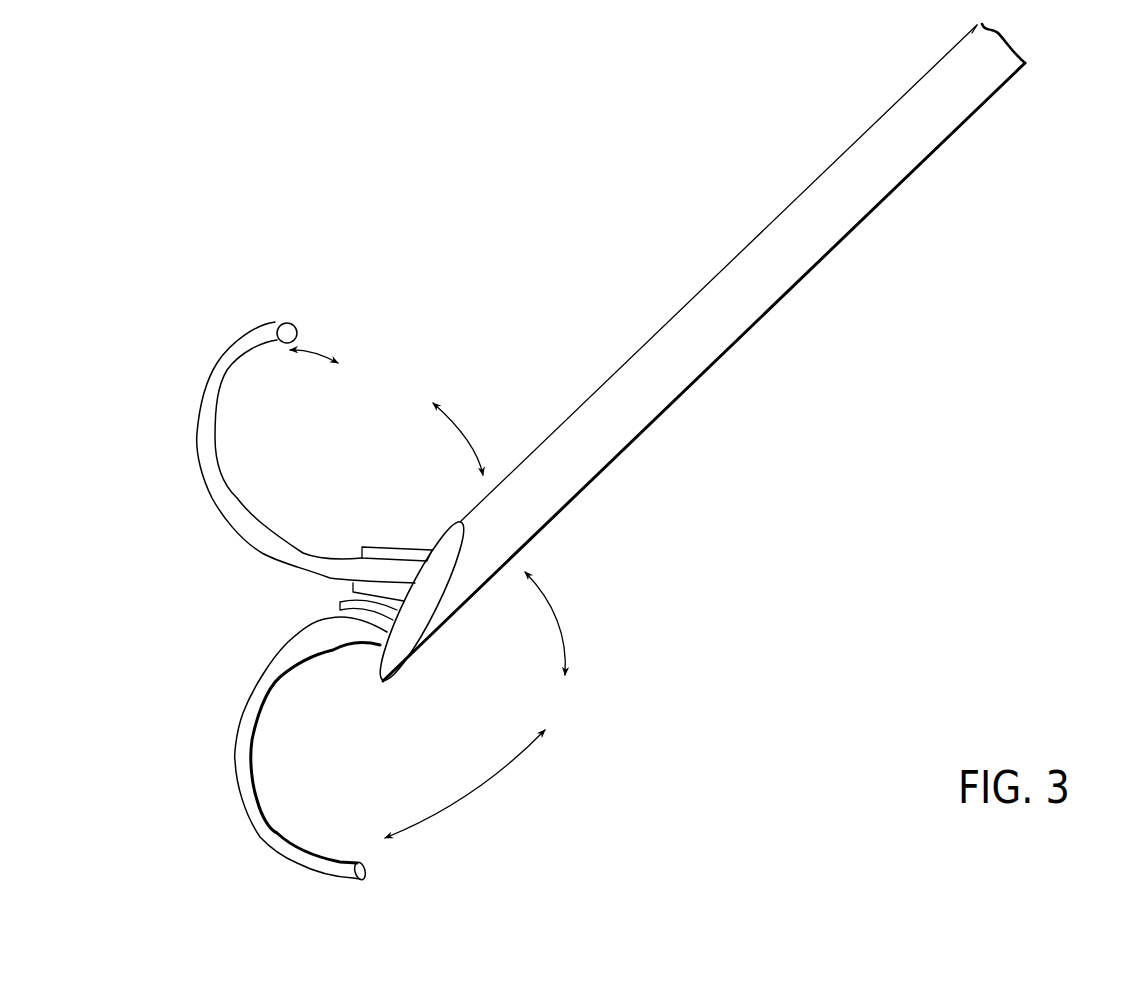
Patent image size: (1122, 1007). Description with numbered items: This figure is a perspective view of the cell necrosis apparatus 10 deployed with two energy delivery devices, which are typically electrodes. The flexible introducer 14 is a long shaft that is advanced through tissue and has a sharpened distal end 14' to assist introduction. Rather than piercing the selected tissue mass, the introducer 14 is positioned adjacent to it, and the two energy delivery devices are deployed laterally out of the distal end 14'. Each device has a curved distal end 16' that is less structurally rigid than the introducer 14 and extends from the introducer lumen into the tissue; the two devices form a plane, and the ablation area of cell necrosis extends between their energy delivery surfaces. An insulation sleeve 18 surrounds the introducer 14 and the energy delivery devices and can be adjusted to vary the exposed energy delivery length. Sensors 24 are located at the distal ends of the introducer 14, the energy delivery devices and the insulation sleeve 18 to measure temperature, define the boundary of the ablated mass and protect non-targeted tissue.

The ablation device 10 is at (747, 546).
The flexible introducer 14 is at (704, 353).
The sharpened distal end 14' is at (422, 570).
The distal end 16' is at (246, 600).
The insulation sleeve 18 is at (390, 547).
The sensor 24 is at (283, 320).